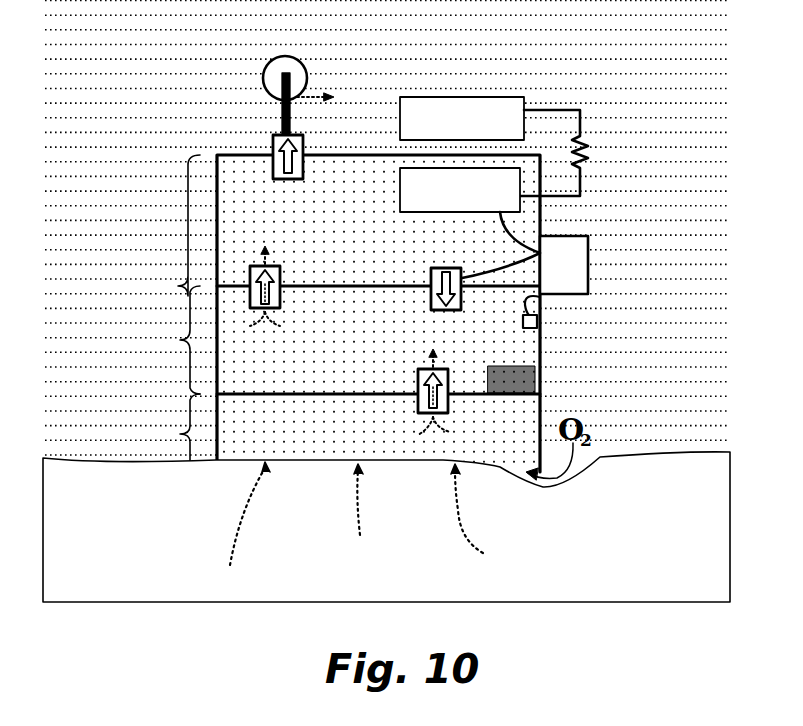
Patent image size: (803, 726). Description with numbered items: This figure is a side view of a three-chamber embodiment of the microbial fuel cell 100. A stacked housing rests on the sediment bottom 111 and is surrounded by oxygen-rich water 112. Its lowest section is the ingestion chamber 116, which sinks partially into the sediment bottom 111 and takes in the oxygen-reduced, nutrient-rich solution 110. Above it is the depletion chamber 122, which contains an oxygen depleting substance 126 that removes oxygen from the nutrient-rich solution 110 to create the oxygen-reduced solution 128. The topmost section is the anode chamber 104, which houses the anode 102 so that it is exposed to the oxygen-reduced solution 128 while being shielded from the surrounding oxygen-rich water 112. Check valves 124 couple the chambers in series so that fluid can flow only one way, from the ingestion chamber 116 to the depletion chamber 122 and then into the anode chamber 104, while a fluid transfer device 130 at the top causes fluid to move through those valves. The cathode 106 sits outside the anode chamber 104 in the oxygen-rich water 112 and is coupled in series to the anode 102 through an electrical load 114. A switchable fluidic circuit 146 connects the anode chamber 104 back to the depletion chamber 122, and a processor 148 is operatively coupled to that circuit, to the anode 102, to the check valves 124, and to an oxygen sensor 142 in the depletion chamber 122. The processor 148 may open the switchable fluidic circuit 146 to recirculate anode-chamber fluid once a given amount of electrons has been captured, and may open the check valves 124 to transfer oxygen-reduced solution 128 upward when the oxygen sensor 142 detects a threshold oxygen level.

The microbial fuel cell 100 is at (604, 70).
The anode 102 is at (400, 199).
The anode chamber 104 is at (332, 313).
The cathode 106 is at (486, 97).
The nutrient-rich solution 110 is at (318, 443).
The sediment bottom 111 is at (433, 521).
The oxygen-rich water 112 is at (159, 75).
The electrical load 114 is at (590, 141).
The ingestion chamber 116 is at (163, 433).
The depletion chamber 122 is at (333, 340).
The check valves 124 is at (272, 146).
The oxygen depleting substance 126 is at (513, 366).
The oxygen-reduced solution 128 is at (301, 229).
The fluid transfer device 130 is at (291, 56).
The oxygen sensor 142 is at (538, 321).
The switchable fluidic circuit 146 is at (437, 268).
The processor 148 is at (588, 262).